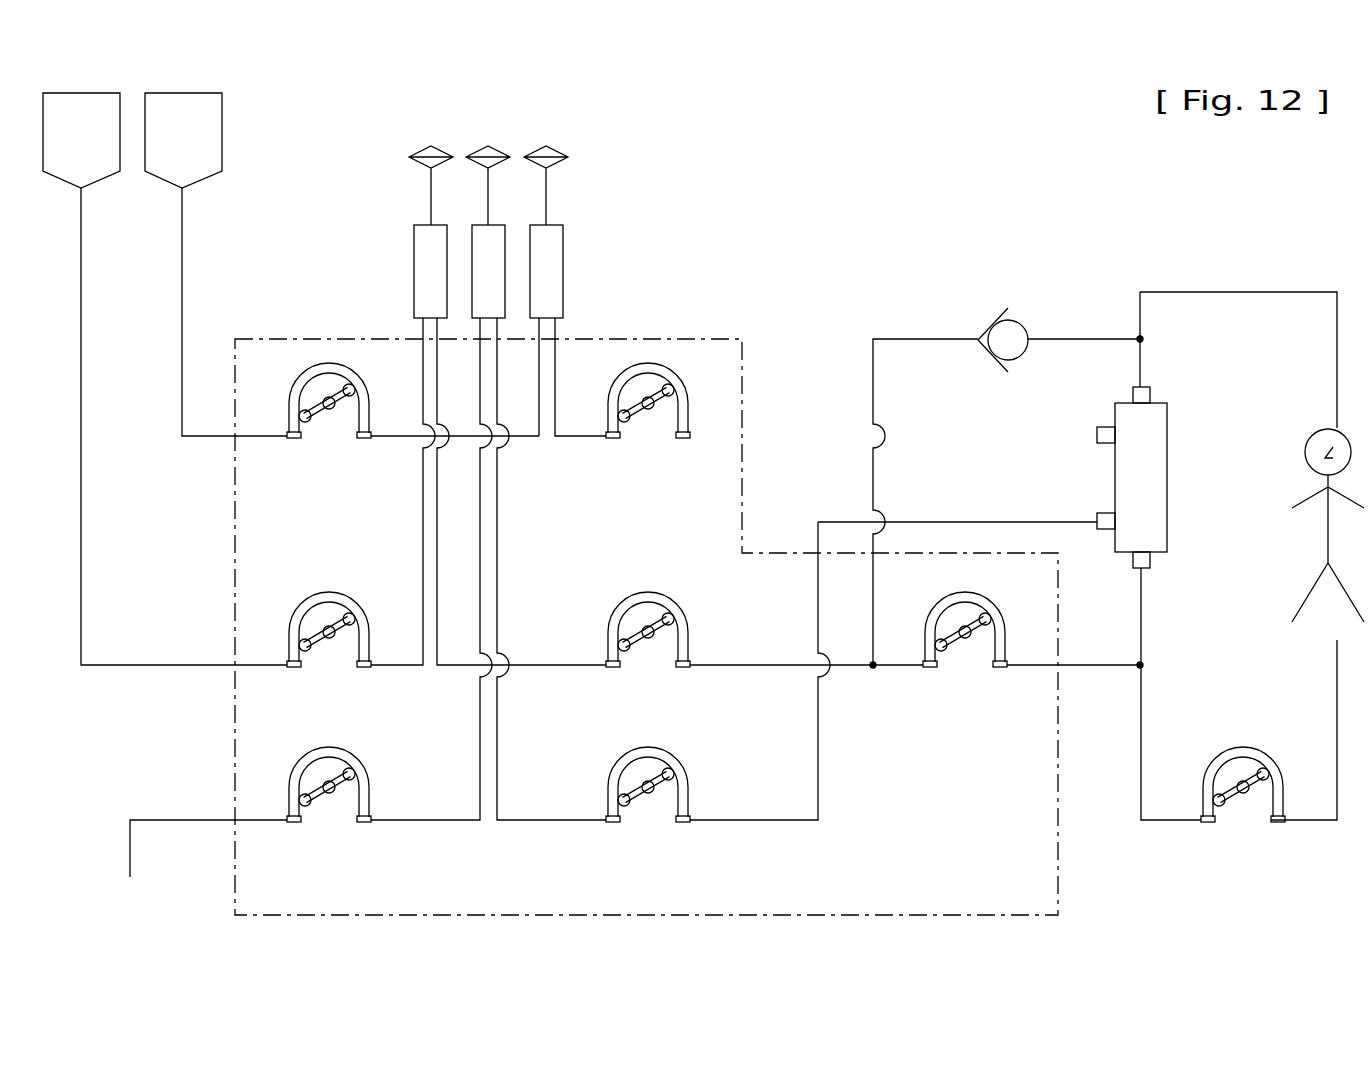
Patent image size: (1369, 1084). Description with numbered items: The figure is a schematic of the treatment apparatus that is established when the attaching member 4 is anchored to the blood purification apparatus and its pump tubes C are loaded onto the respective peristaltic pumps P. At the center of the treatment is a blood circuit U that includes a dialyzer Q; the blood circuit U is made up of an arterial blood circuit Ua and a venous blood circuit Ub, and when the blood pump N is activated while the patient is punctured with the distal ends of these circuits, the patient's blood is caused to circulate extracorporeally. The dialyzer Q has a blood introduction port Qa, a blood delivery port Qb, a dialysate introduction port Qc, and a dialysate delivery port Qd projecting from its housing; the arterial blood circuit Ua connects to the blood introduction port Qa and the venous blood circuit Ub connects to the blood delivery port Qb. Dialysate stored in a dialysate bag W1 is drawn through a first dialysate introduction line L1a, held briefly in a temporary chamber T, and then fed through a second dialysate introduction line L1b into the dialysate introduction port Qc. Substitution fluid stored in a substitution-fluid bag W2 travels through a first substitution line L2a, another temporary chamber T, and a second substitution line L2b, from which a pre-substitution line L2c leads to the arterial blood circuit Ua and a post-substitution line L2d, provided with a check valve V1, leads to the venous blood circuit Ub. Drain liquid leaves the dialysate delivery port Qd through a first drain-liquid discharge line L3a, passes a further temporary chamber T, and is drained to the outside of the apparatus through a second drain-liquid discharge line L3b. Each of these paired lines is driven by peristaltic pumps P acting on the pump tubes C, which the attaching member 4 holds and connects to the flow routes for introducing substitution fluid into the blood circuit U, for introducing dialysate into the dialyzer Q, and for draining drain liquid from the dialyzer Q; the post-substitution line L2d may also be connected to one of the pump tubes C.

The dialysate bag W1 is at (168, 143).
The substitution-fluid bag W2 is at (66, 143).
The temporary chamber T is at (414, 263).
The pump tube C is at (340, 362).
The peristaltic pump P is at (343, 452).
The first dialysate introduction line L1a is at (395, 440).
The second dialysate introduction line L1b is at (568, 440).
The first substitution line L2a is at (394, 669).
The second substitution line L2b is at (748, 669).
The pre-substitution line L2c is at (898, 669).
The post-substitution line L2d is at (873, 388).
The first drain-liquid discharge line L3a is at (778, 824).
The second drain-liquid discharge line L3b is at (423, 824).
The check valve V1 is at (1015, 320).
The attaching member 4 is at (1060, 850).
The blood circuit U is at (1172, 262).
The arterial blood circuit Ua is at (1190, 822).
The venous blood circuit Ub is at (1260, 292).
The blood pump N is at (1252, 836).
The dialyzer Q is at (1186, 477).
The blood introduction port Qa is at (1136, 572).
The blood delivery port Qb is at (1150, 393).
The dialysate introduction port Qc is at (1102, 425).
The dialysate delivery port Qd is at (1105, 531).